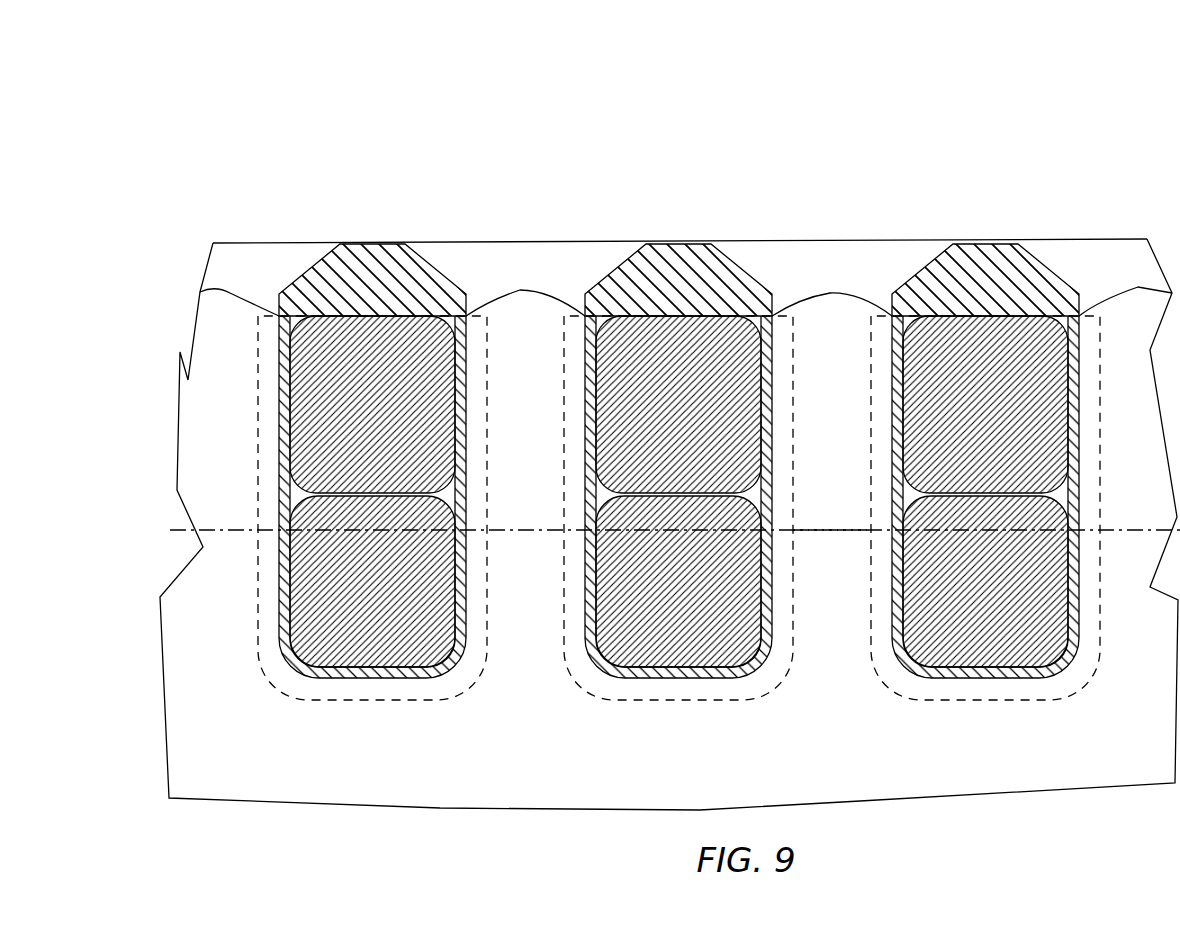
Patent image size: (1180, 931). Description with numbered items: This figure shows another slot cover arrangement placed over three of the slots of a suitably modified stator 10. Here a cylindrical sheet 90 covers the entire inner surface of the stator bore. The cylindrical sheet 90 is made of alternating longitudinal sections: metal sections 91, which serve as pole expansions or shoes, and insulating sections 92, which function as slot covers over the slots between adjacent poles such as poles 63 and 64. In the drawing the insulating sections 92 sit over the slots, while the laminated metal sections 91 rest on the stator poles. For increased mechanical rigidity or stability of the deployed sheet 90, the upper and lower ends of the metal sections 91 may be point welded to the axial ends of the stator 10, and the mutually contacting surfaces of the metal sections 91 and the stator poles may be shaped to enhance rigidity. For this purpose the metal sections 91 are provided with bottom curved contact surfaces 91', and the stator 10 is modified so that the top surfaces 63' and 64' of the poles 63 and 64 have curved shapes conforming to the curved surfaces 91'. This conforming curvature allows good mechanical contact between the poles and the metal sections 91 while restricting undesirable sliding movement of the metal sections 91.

The stator 10 is at (250, 130).
The cylindrical sheet 90 is at (678, 193).
The metal sections 91 is at (680, 203).
The bottom curved contact surfaces 91' is at (664, 242).
The insulating sections 92 is at (358, 246).
The pole 63 is at (655, 508).
The top surface of stator pole 63' is at (398, 508).
The pole 64 is at (832, 582).
The top surface of stator pole 64' is at (958, 508).